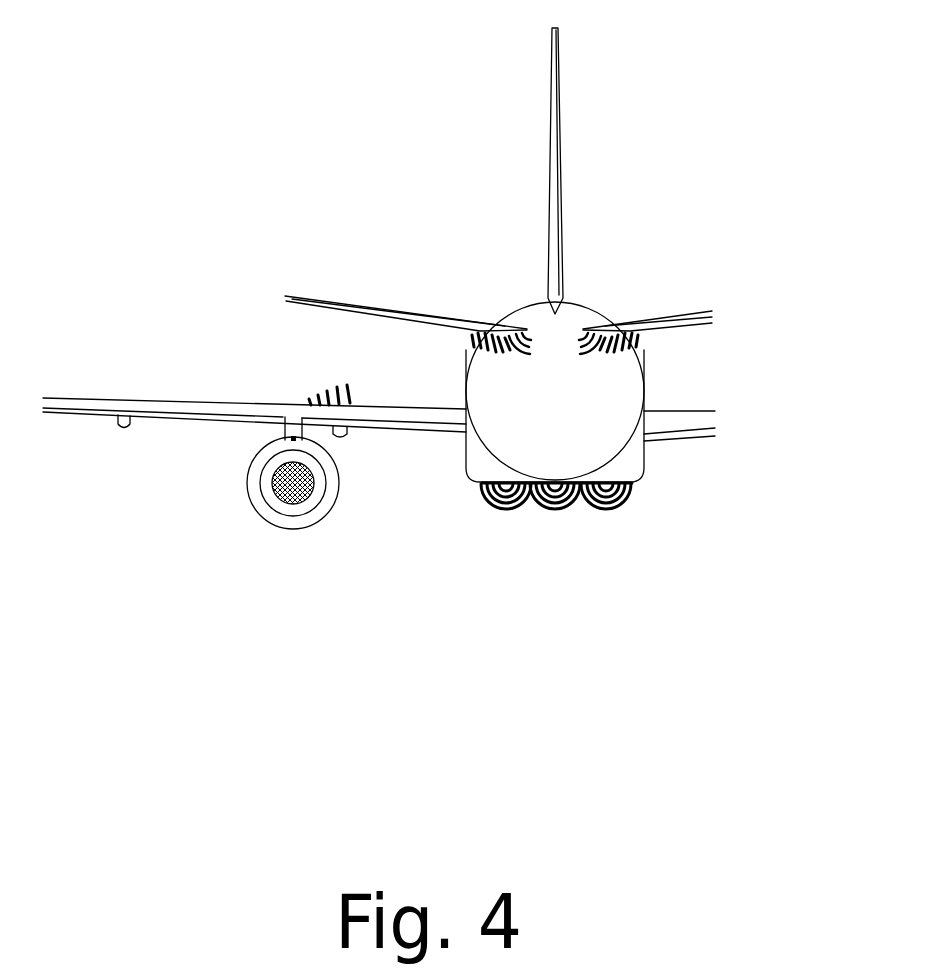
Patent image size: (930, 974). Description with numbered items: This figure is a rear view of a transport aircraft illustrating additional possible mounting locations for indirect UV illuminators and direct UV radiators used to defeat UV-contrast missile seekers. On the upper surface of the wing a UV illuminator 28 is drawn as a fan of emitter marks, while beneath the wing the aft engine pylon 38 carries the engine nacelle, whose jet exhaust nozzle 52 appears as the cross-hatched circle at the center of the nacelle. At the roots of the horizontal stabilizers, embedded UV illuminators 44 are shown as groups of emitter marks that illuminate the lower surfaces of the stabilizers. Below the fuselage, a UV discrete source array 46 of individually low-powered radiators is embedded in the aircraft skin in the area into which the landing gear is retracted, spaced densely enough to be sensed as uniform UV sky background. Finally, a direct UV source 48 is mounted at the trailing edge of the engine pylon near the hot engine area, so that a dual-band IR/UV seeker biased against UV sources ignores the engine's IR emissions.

The UV illuminator 28 is at (293, 406).
The aft engine pylon 38 is at (283, 424).
The UV illuminator 44 is at (527, 358).
The UV discrete source array 46 is at (585, 500).
The UV source 48 is at (297, 443).
The jet exhaust nozzle 52 is at (280, 483).